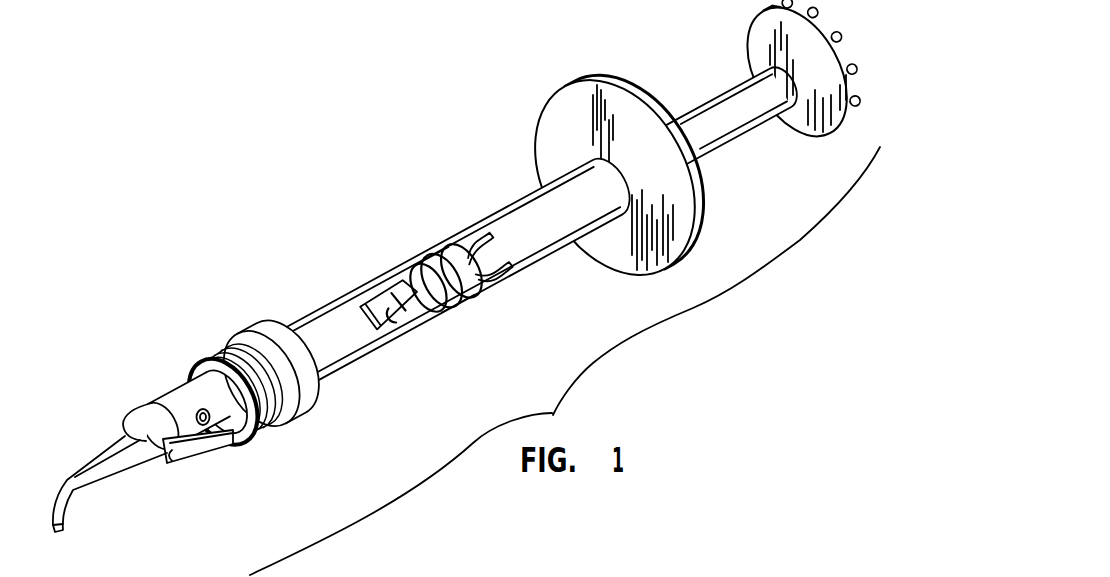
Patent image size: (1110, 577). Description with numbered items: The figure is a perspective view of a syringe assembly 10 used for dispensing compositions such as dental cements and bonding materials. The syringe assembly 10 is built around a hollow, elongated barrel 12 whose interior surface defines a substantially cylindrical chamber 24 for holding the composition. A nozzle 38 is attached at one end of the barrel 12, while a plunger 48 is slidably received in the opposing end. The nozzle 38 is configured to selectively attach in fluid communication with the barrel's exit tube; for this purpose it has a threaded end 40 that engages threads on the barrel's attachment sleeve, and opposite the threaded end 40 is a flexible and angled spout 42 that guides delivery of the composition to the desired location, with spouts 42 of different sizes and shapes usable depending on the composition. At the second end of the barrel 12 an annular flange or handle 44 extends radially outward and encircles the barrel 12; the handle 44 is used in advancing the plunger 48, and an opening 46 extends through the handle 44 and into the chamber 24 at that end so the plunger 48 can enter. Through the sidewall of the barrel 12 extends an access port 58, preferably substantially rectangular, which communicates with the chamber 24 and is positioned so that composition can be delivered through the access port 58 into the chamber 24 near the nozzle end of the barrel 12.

The syringe assembly 10 is at (397, 178).
The barrel 12 is at (447, 281).
The chamber 24 is at (391, 323).
The nozzle 38 is at (132, 414).
The threaded end 40 is at (297, 403).
The spout 42 is at (70, 497).
The handle 44 is at (647, 238).
The opening 46 is at (612, 186).
The plunger 48 is at (720, 90).
The access port 58 is at (380, 315).